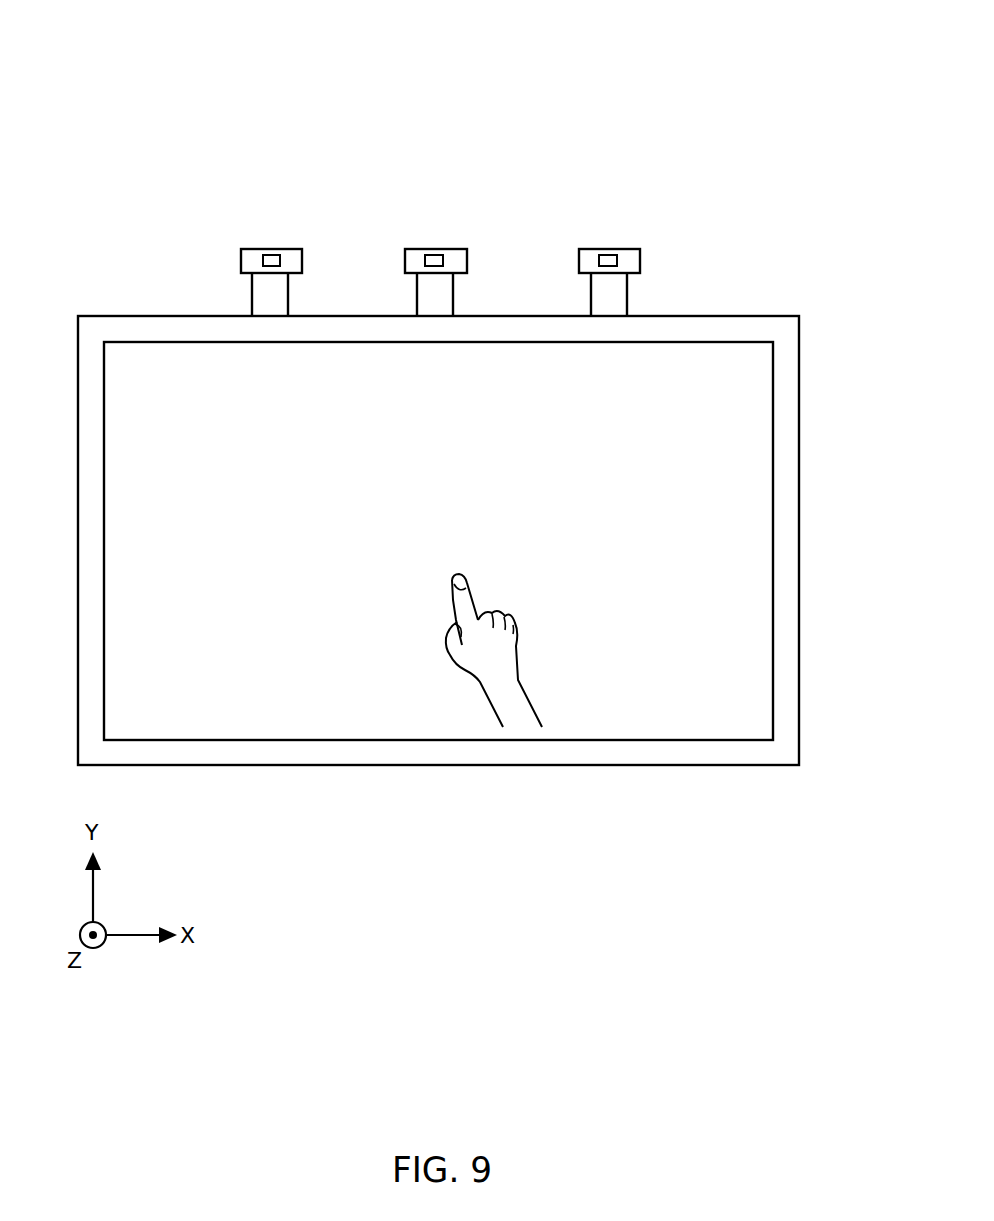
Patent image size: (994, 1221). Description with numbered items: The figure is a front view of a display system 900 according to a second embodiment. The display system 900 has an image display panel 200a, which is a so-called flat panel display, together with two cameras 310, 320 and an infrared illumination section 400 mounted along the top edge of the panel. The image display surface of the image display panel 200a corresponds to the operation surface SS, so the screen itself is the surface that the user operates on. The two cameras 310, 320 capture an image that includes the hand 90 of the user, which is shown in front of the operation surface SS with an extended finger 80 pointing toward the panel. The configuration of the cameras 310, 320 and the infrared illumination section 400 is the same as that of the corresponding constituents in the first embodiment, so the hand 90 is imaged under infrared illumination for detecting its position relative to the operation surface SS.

The display system 900 is at (751, 80).
The image display panel 200a is at (748, 316).
The operation surface SS is at (160, 342).
The camera 310 is at (271, 249).
The infrared illumination section 400 is at (436, 249).
The camera 320 is at (606, 249).
The finger (pointing element) 80 is at (455, 601).
The hand 90 is at (480, 647).